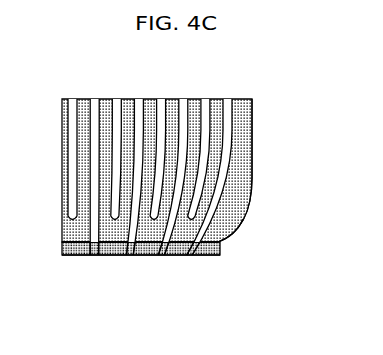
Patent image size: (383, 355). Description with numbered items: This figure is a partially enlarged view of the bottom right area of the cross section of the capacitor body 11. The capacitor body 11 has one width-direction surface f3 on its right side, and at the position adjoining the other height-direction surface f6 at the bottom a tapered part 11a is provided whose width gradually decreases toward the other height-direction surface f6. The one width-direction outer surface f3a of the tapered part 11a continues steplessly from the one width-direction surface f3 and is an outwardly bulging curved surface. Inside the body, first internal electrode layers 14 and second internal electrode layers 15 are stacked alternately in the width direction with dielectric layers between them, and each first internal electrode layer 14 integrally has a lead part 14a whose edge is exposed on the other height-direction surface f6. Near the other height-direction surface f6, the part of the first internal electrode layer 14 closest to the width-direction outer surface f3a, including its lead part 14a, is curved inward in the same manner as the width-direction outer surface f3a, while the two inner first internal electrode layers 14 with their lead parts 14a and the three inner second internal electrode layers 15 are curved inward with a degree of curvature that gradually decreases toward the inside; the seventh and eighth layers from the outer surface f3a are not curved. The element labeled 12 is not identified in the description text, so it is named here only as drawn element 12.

The capacitor body 11 is at (251, 113).
The tapered part 11a is at (246, 199).
The base plate 12 is at (218, 247).
The first internal electrode layer 14 is at (97, 98).
The lead part 14a is at (98, 257).
The second internal electrode layer 15 is at (74, 98).
The one width-direction surface f3 is at (251, 135).
The one width-direction outer surface f3a is at (238, 231).
The other height-direction surface f6 is at (82, 257).